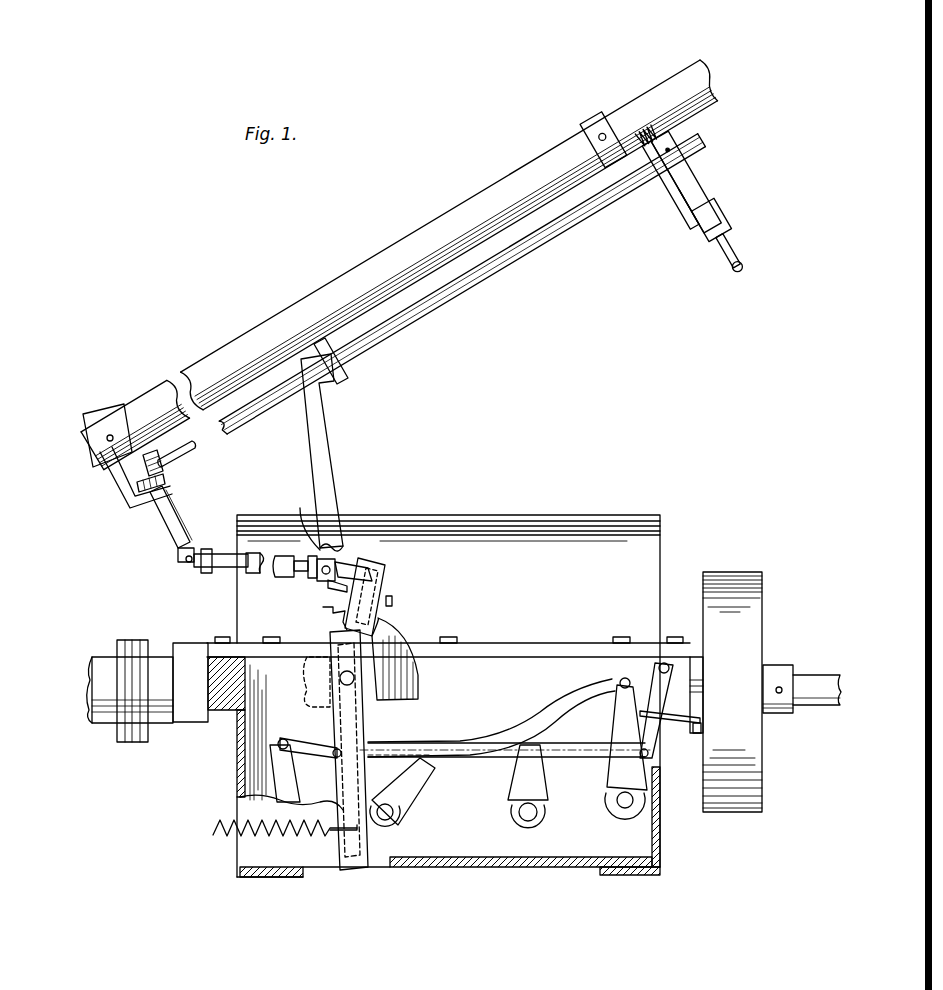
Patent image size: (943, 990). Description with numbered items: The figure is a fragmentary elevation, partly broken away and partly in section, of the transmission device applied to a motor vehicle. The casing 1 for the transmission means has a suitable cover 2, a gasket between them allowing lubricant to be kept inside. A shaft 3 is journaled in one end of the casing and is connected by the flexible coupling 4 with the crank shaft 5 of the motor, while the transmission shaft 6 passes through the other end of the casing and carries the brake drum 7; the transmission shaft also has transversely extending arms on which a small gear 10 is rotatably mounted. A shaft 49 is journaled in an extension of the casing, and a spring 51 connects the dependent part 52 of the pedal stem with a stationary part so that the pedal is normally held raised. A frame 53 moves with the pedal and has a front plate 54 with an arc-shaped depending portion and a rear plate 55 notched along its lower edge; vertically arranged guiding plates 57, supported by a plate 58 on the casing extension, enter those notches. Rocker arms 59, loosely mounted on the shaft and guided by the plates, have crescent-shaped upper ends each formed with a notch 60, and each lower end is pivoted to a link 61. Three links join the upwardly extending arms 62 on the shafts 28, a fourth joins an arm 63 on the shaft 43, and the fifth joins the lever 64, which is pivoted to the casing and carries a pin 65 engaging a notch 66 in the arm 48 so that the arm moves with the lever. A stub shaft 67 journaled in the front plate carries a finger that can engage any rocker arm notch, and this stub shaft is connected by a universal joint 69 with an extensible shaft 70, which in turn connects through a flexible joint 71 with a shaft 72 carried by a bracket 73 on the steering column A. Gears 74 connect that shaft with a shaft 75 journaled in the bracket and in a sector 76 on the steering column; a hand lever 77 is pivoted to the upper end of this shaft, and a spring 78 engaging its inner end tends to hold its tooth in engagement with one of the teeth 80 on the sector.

The steering column A is at (328, 276).
The casing 1 is at (235, 745).
The cover 2 is at (560, 515).
The shaft 3 is at (172, 690).
The flexible coupling 4 is at (132, 742).
The crank shaft 5 is at (90, 700).
The transmission shaft 6 is at (818, 678).
The brake drum 7 is at (764, 610).
The small gear 10 is at (415, 540).
The shafts 28 is at (393, 812).
The shaft 43 is at (630, 802).
The arm 48 is at (698, 700).
The shaft 49 is at (356, 678).
The spring 51 is at (222, 834).
The dependent part 52 is at (364, 866).
The frame 53 is at (388, 566).
The front plate 54 is at (328, 588).
The rear plate 55 is at (393, 598).
The guiding plates 57 is at (410, 650).
The plate 58 is at (250, 642).
The rocker arms 59 is at (330, 716).
The notch 60 is at (322, 438).
The link 61 is at (474, 740).
The upwardly extending arms 62 is at (293, 780).
The arm 63 is at (617, 777).
The lever 64 is at (655, 680).
The pin 65 is at (705, 722).
The notch 66 is at (697, 733).
The stub shaft 67 is at (360, 560).
The universal joint 69 is at (302, 520).
The extensible shaft 70 is at (246, 573).
The flexible joint 71 is at (188, 564).
The shaft 72 is at (168, 540).
The bracket 73 is at (126, 506).
The gears 74 is at (165, 470).
The shaft 75 is at (458, 285).
The sector 76 is at (674, 187).
The hand lever 77 is at (695, 183).
The spring 78 is at (670, 135).
The teeth 80 is at (693, 222).